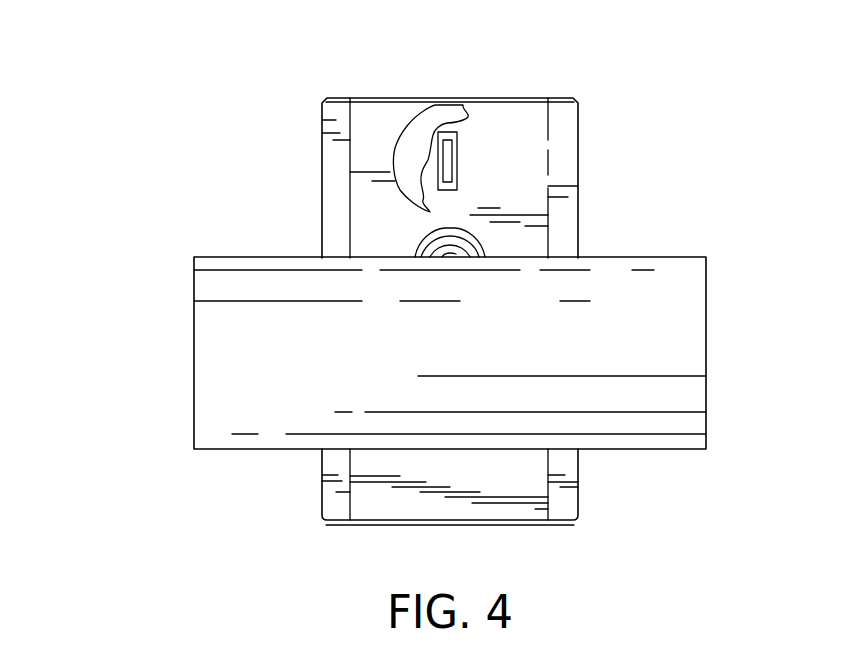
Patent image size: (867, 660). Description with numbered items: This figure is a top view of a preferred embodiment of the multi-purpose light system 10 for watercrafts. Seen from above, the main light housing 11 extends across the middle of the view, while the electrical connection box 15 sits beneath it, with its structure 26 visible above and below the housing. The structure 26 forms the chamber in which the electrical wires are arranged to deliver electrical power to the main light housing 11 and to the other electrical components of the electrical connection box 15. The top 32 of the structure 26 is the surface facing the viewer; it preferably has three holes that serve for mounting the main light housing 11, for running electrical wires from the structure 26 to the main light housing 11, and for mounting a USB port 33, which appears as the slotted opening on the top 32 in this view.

The multi-purpose light system 10 is at (160, 187).
The main light housing 11 is at (706, 324).
The electrical connection box 15 is at (521, 264).
The structure 26 is at (578, 153).
The top 32 is at (527, 120).
The USB port 33 is at (455, 153).